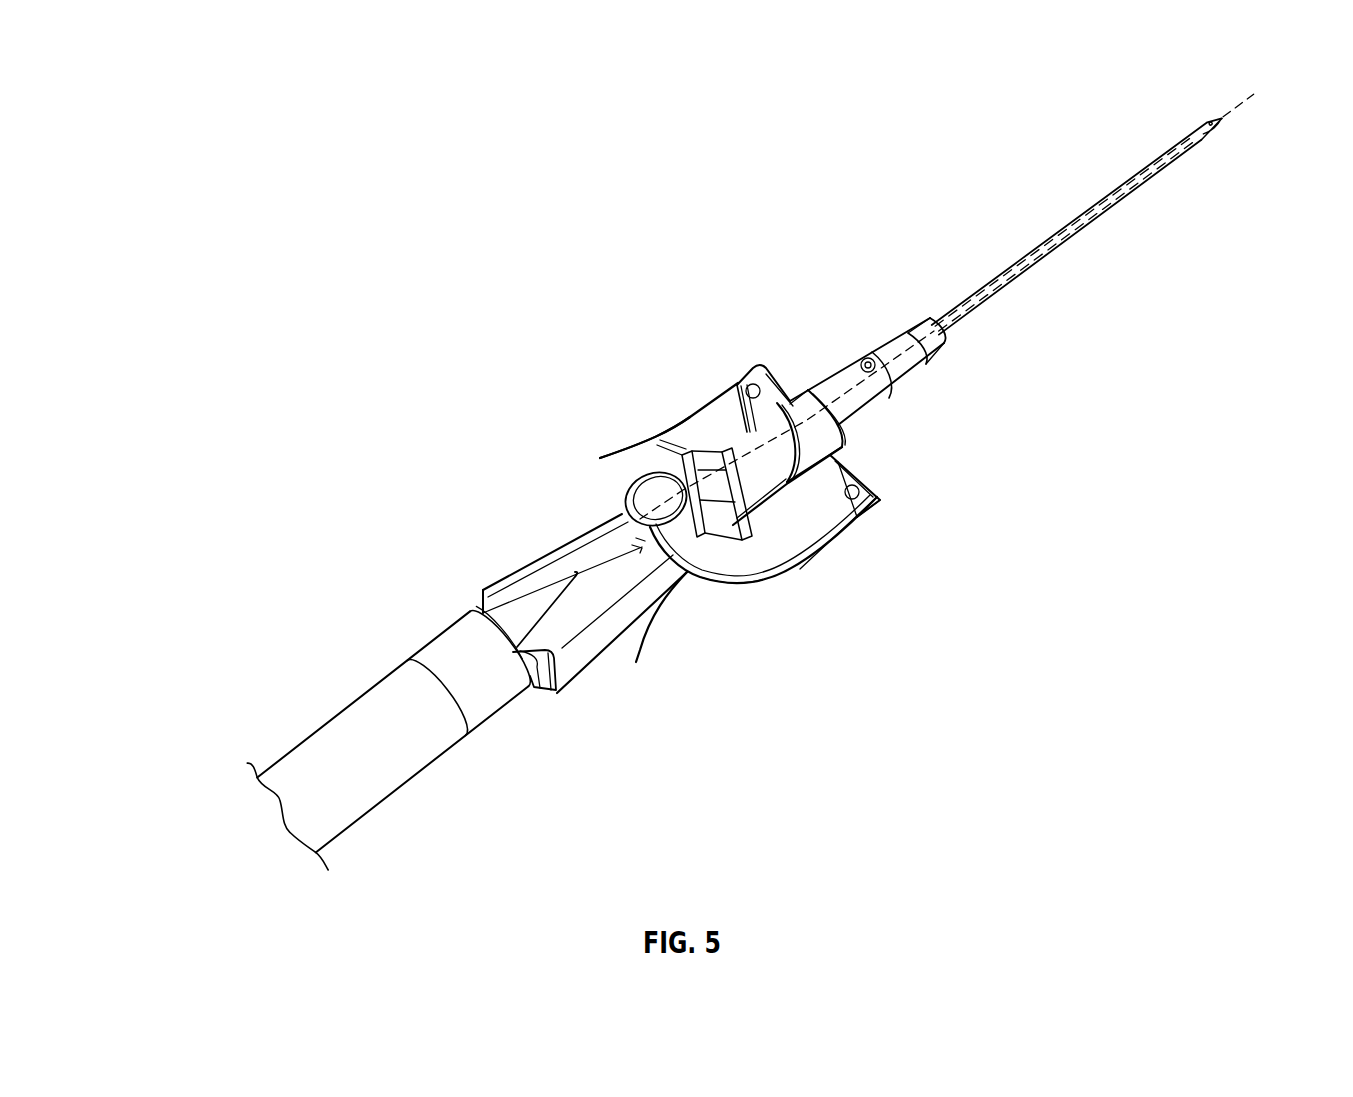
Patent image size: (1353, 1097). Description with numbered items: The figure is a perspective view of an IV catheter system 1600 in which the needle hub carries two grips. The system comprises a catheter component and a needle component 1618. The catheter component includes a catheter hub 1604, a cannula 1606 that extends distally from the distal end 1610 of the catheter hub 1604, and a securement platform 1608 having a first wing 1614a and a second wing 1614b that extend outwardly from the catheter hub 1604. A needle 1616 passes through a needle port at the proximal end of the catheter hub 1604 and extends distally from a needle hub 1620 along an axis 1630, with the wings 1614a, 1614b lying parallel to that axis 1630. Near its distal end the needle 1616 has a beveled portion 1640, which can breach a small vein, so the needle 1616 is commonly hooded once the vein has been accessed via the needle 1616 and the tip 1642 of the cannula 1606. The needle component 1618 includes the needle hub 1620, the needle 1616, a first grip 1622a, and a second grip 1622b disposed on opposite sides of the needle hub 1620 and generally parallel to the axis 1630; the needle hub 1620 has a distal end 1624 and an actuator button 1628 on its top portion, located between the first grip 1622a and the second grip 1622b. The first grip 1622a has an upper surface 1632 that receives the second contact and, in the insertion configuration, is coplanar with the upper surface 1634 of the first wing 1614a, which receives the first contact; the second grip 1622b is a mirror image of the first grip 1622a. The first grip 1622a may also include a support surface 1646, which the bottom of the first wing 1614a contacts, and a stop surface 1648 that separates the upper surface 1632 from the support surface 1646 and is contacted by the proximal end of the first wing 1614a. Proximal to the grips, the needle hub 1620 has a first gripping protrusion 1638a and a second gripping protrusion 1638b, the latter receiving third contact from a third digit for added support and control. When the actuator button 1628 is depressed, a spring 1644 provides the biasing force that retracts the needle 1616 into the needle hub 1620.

The IV catheter system 1600 is at (404, 283).
The catheter hub 1604 is at (836, 388).
The cannula 1606 is at (1115, 192).
The securement platform 1608 is at (892, 404).
The distal end 1610 is at (936, 321).
The first wing 1614a is at (838, 466).
The second wing 1614b is at (767, 381).
The needle 1616 is at (747, 467).
The needle component 1618 is at (321, 626).
The needle hub 1620 is at (567, 540).
The first grip 1622a is at (805, 541).
The second grip 1622b is at (723, 403).
The distal end 1624 is at (733, 567).
The actuator button 1628 is at (645, 479).
The axis 1630 is at (1256, 107).
The upper surface 1632 is at (670, 450).
The upper surface 1634 is at (841, 435).
The first gripping protrusion 1638a is at (567, 668).
The second gripping protrusion 1638b is at (510, 592).
The beveled portion 1640 is at (1212, 121).
The tip 1642 is at (1177, 154).
The spring 1644 is at (641, 616).
The support surface 1646 is at (863, 500).
The stop surface 1648 is at (864, 516).